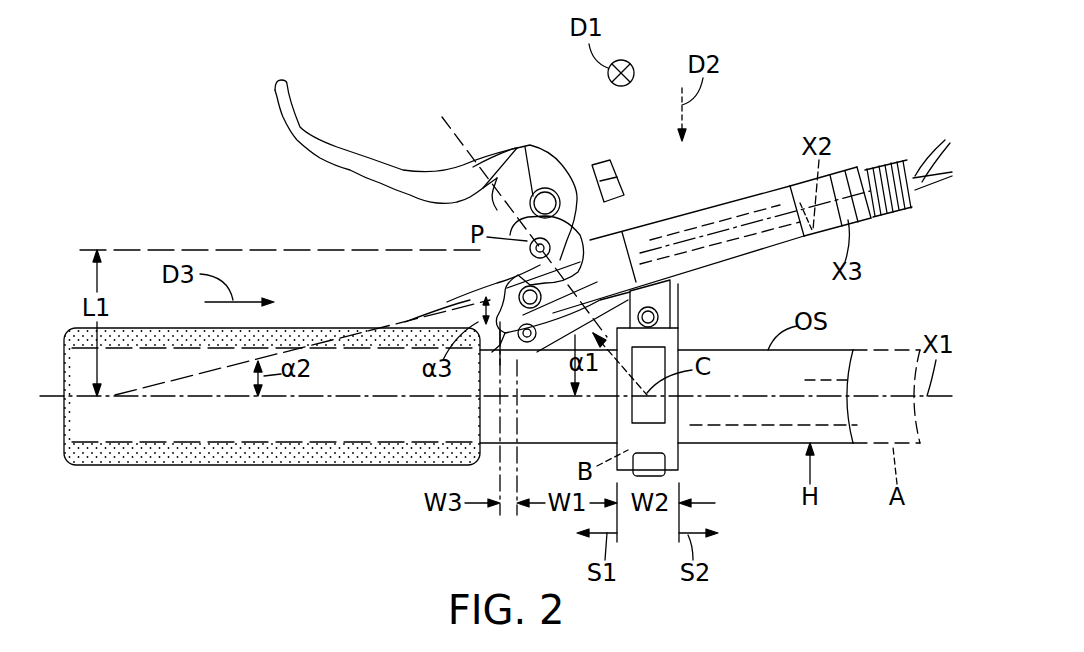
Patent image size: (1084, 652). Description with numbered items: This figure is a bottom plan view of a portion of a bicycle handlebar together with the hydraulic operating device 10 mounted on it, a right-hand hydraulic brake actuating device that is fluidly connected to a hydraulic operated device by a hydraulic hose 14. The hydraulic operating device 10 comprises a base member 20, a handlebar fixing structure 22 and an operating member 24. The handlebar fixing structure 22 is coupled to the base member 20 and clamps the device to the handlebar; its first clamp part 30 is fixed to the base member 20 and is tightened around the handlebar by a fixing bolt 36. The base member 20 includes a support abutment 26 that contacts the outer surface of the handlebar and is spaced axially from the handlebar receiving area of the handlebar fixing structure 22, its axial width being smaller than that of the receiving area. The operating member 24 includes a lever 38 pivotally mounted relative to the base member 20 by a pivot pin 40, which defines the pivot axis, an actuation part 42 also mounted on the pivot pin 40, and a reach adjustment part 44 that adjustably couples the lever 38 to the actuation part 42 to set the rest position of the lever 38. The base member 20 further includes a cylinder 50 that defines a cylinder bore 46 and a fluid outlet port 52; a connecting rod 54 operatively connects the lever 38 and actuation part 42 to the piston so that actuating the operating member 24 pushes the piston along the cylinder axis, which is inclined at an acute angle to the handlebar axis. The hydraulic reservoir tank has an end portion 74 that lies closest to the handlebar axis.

The hydraulic operating device 10 is at (796, 64).
The hydraulic hose 14 is at (924, 168).
The base member 20 is at (488, 267).
The handlebar fixing structure 22 is at (690, 465).
The operating member 24 is at (538, 161).
The support abutment 26 is at (495, 333).
The first clamp part 30 is at (672, 414).
The fixing bolt 36 is at (660, 314).
The lever 38 is at (348, 142).
The pivot pin 40 is at (528, 245).
The actuation part 42 is at (475, 287).
The reach adjustment part 44 is at (624, 158).
The cylinder bore 46 is at (777, 193).
The cylinder 50 is at (735, 198).
The fluid outlet port 52 is at (798, 243).
The connecting rod 54 is at (570, 172).
The end portion 74 is at (512, 372).